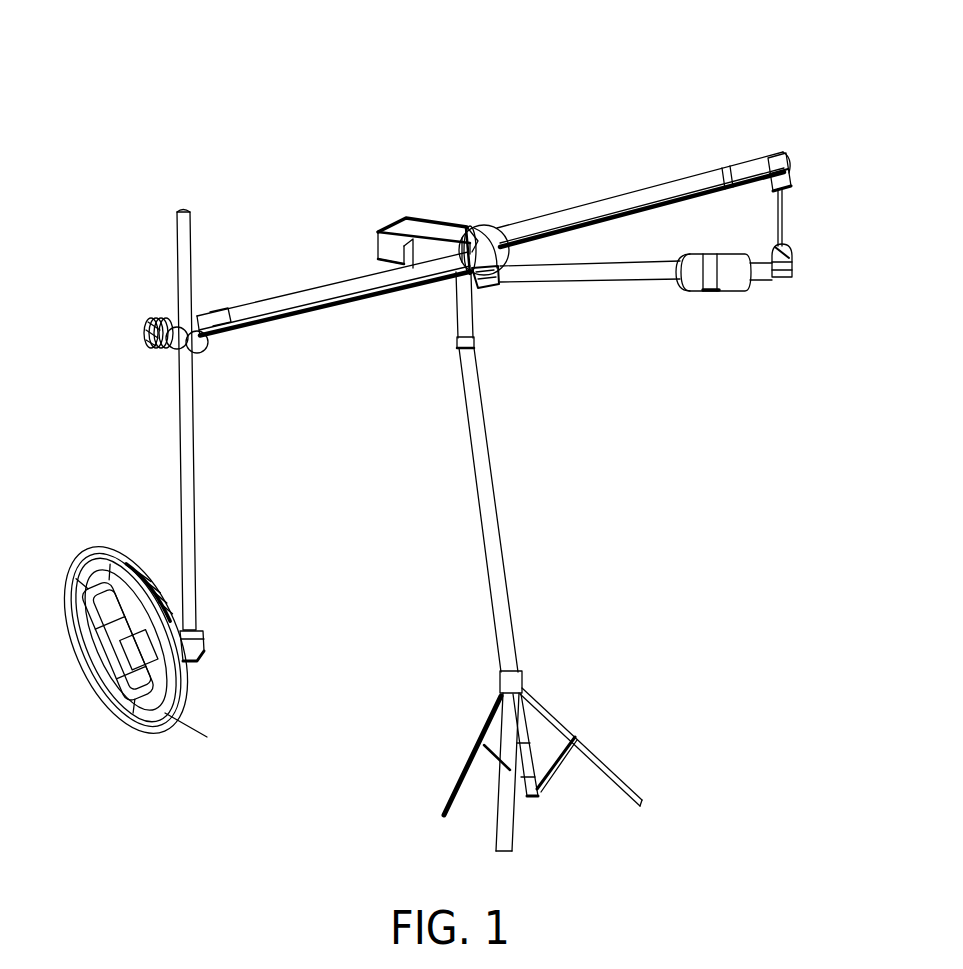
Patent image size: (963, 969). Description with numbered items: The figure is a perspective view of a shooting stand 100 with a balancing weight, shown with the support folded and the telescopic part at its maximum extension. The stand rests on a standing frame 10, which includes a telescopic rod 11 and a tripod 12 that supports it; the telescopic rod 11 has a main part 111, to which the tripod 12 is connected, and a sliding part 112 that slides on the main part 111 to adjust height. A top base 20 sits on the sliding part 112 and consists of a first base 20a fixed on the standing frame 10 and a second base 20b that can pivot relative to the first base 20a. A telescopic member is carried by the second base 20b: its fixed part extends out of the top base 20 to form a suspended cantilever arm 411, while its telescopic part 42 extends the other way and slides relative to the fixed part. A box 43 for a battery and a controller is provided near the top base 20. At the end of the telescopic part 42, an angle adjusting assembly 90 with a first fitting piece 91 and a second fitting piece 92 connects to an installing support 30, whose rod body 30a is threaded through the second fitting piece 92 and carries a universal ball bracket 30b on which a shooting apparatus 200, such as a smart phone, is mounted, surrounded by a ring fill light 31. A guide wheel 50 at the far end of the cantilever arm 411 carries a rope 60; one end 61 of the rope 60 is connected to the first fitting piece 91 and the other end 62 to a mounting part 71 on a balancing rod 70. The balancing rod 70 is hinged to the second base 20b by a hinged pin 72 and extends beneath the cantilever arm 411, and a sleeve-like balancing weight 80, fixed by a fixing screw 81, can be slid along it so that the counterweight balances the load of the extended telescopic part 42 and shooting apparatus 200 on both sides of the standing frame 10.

The shooting stand 100 is at (68, 37).
The standing frame 10 is at (330, 397).
The telescopic rod 11 is at (366, 353).
The main part 111 is at (473, 493).
The sliding part 112 is at (458, 323).
The tripod 12 is at (494, 691).
The top base 20 is at (447, 103).
The first base 20a is at (470, 236).
The second base 20b is at (494, 231).
The installing support 30 is at (70, 449).
The rod body 30a is at (184, 500).
The universal ball bracket 30b is at (160, 586).
The ring fill light 31 is at (141, 657).
The telescopic part 42 is at (302, 296).
The box 43 is at (403, 234).
The cantilever arm 411 is at (604, 208).
The guide wheel 50 is at (788, 169).
The rope 60 is at (703, 186).
The one end of the rope 61 is at (238, 322).
The other end of the rope 62 is at (786, 218).
The balancing rod 70 is at (644, 292).
The mounting part 71 is at (790, 256).
The hinged pin 72 is at (492, 278).
The balancing weight 80 is at (724, 275).
The fixing screw 81 is at (711, 292).
The angle adjusting assembly 90 is at (70, 287).
The first fitting piece 91 is at (160, 322).
The second fitting piece 92 is at (172, 343).
The shooting apparatus 200 is at (125, 683).